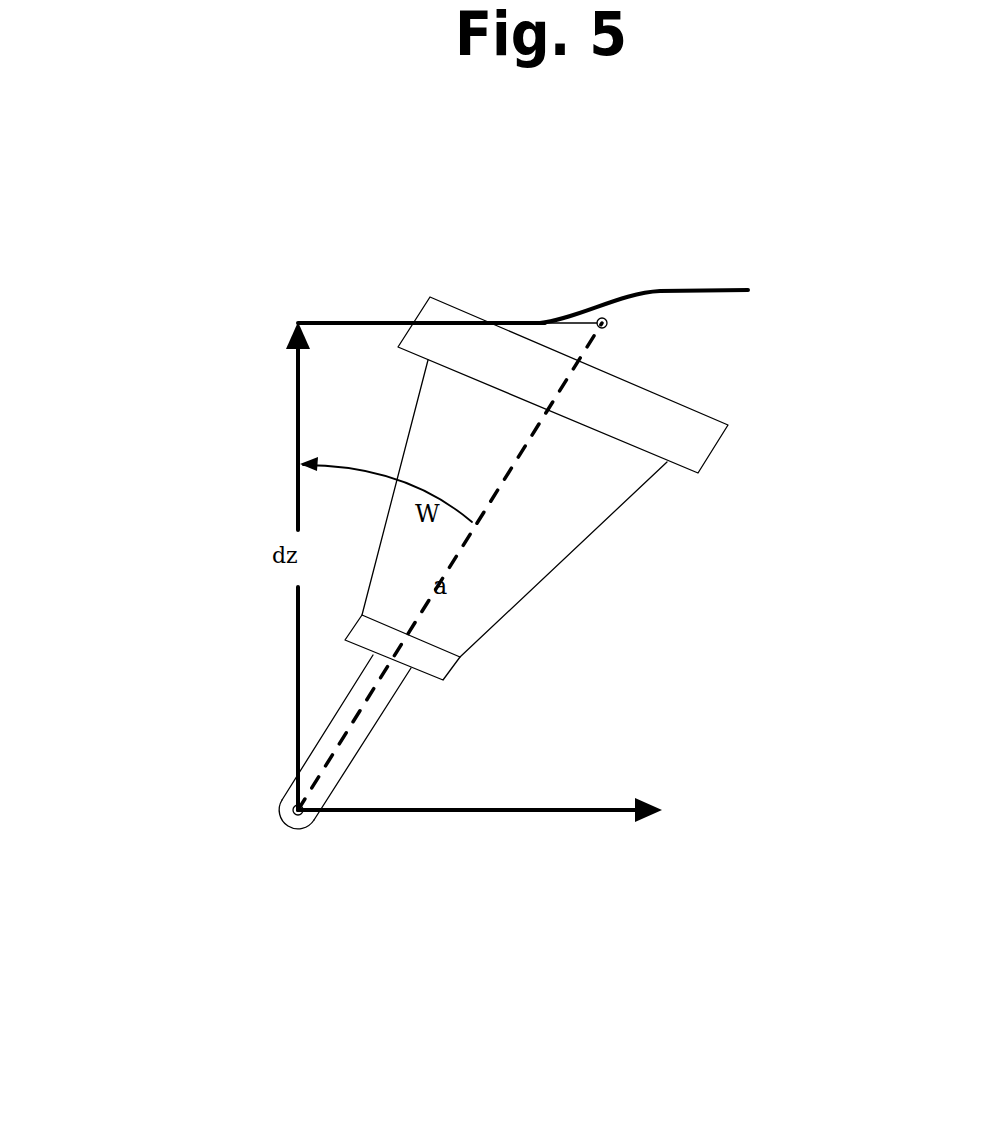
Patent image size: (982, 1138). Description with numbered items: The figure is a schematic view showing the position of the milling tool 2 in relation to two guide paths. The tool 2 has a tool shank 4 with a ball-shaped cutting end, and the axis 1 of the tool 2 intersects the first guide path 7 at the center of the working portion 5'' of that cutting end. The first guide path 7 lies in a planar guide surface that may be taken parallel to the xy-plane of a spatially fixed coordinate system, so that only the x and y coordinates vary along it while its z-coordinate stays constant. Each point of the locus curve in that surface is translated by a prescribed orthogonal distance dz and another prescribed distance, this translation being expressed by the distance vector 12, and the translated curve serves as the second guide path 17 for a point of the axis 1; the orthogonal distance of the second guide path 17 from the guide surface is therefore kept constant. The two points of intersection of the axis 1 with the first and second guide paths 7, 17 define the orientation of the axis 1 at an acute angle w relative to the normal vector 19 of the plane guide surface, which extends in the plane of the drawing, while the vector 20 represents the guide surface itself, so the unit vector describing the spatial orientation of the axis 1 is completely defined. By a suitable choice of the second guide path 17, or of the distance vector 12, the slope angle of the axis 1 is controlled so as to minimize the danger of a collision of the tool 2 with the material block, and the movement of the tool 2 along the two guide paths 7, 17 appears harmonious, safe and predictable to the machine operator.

The axis 1 is at (520, 457).
The tool 2 is at (625, 555).
The tool shank 4 is at (337, 712).
The working portion 5'' is at (283, 890).
The first guide path 7 is at (286, 816).
The distance vector 12 is at (562, 294).
The second guide path 17 is at (605, 327).
The normal vector 19 is at (298, 421).
The vector 20 is at (552, 812).